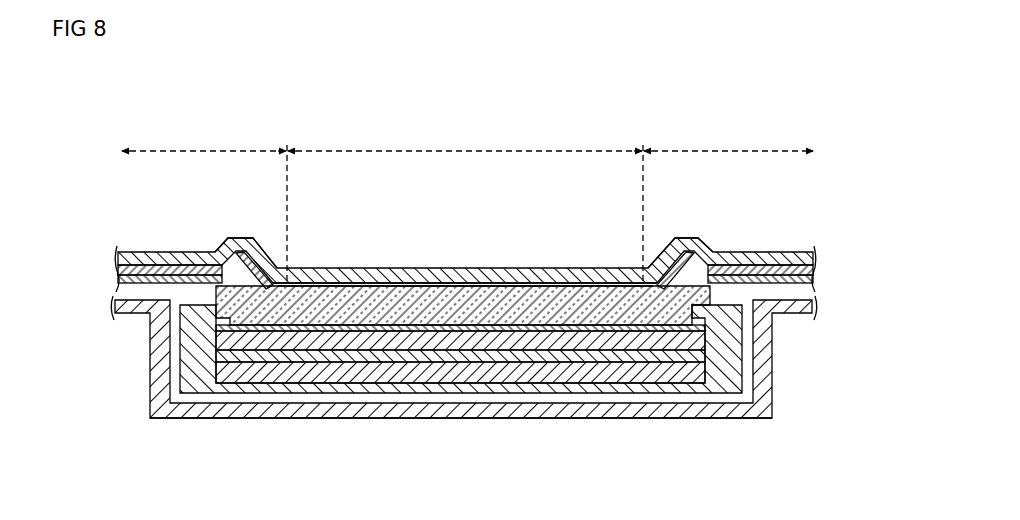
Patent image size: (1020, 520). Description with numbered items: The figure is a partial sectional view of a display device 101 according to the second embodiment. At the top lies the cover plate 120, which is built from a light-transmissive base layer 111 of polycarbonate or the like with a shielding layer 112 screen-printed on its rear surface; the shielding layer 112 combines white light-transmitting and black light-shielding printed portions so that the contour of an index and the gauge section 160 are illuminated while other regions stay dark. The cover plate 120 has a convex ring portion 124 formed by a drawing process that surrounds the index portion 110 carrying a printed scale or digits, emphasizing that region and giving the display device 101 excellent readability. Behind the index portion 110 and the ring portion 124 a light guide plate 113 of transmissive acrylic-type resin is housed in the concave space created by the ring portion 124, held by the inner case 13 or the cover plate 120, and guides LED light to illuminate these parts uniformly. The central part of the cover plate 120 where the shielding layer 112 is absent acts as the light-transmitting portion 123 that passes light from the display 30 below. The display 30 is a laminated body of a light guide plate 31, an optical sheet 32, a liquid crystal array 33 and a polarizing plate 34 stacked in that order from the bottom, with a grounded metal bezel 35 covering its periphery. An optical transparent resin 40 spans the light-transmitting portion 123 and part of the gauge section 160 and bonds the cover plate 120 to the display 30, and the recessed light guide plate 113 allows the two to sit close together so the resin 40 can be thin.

The display device 101 is at (684, 102).
The gauge section 160 is at (467, 140).
The light-transmitting portion 123 is at (465, 206).
The index portion 110 is at (159, 252).
The base layer 111 is at (117, 253).
The shielding layer 112 is at (117, 269).
The light guide plate 113 is at (117, 279).
The ring portion 124 is at (232, 237).
The cover plate 120 is at (414, 268).
The optical transparent resin 40 is at (548, 283).
The display 30 is at (247, 400).
The inner case 13 is at (641, 419).
The metal bezel 35 is at (741, 377).
The polarizing plate 34 is at (378, 333).
The liquid crystal array 33 is at (452, 350).
The optical sheet 32 is at (510, 362).
The light guide plate 31 is at (568, 383).